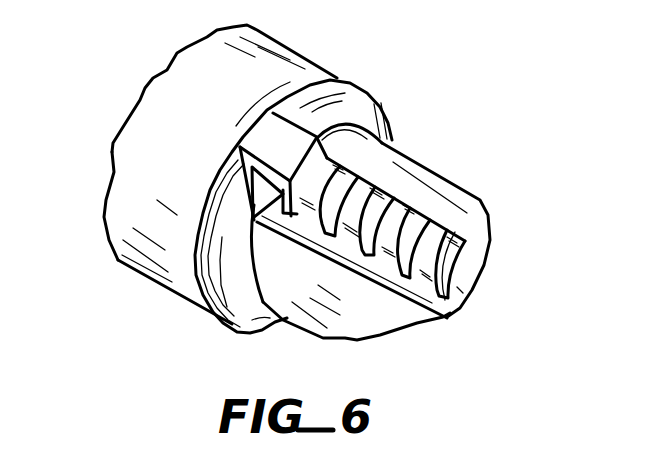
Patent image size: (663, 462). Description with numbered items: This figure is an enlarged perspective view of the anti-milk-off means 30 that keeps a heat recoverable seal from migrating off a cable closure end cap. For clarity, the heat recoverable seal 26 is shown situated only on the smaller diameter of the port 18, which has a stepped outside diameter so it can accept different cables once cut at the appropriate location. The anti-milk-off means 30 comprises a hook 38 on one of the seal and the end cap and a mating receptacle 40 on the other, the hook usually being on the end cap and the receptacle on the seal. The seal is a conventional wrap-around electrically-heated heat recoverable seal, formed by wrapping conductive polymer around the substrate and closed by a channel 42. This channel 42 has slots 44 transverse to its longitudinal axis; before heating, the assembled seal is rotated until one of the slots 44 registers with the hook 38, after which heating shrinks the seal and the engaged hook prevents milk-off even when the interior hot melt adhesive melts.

The port 18 is at (213, 88).
The heat recoverable seal 26 is at (481, 200).
The anti-milk-off means 30 is at (312, 122).
The hook 38 is at (237, 150).
The mating receptacle 40 is at (385, 140).
The channel 42 is at (437, 258).
The slots 44 is at (343, 198).